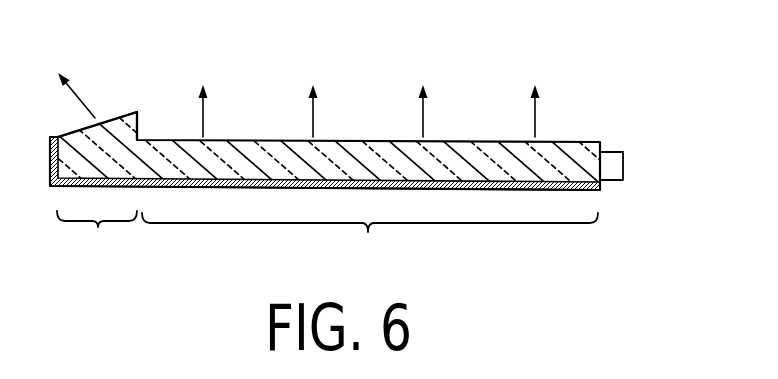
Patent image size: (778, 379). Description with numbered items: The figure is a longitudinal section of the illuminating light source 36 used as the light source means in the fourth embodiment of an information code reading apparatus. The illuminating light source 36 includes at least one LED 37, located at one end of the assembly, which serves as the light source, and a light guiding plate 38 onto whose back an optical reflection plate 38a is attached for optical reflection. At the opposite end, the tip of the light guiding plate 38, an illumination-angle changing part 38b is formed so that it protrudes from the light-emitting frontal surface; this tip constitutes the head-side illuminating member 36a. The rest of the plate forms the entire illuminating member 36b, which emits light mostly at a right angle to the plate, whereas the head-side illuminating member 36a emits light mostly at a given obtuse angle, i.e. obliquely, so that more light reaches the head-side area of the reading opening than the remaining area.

The illuminating light source 36 is at (587, 127).
The head-side illuminating member 36a is at (97, 240).
The entire illuminating member 36b is at (370, 242).
The LED 37 is at (623, 163).
The light guiding plate 38 is at (456, 146).
The optical reflection plate 38a is at (580, 191).
The illumination-angle changing part 38b is at (125, 115).